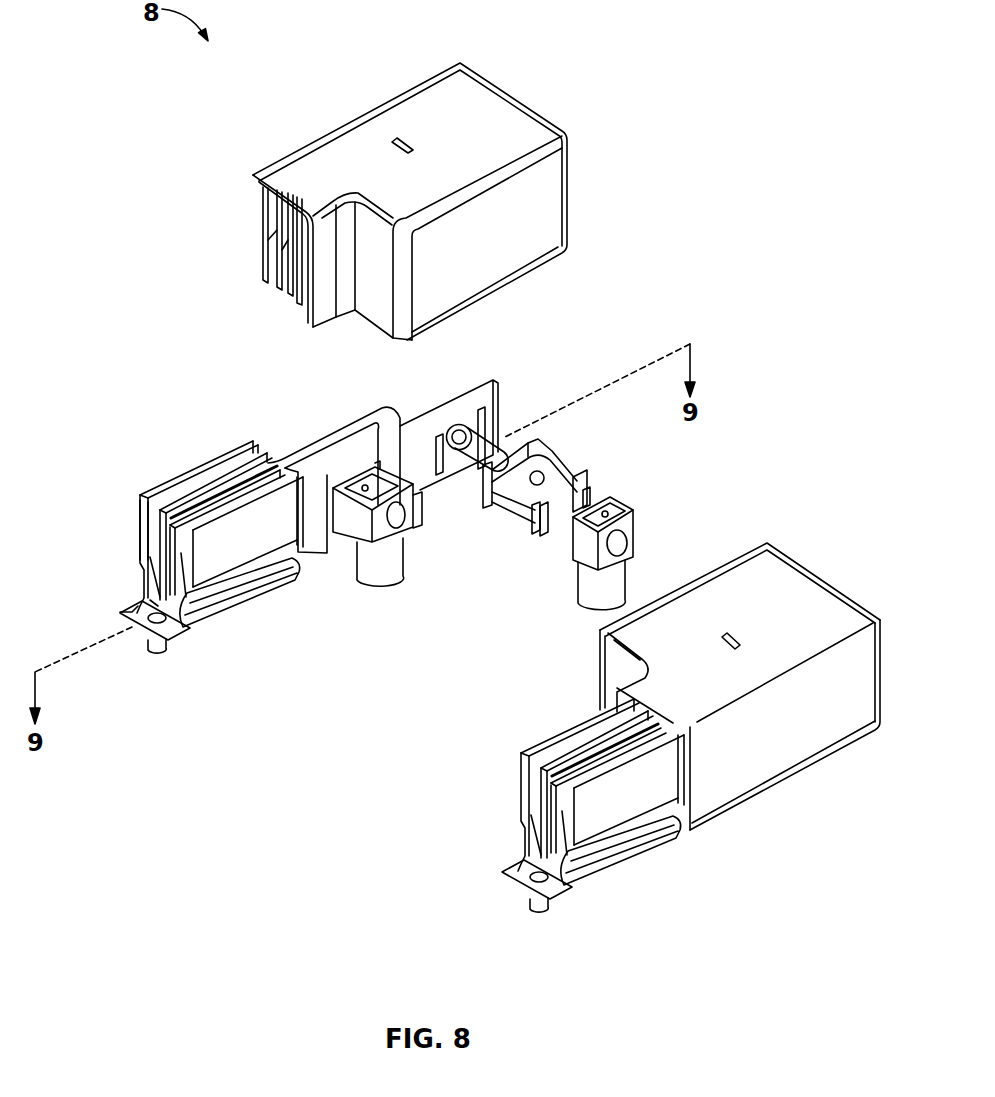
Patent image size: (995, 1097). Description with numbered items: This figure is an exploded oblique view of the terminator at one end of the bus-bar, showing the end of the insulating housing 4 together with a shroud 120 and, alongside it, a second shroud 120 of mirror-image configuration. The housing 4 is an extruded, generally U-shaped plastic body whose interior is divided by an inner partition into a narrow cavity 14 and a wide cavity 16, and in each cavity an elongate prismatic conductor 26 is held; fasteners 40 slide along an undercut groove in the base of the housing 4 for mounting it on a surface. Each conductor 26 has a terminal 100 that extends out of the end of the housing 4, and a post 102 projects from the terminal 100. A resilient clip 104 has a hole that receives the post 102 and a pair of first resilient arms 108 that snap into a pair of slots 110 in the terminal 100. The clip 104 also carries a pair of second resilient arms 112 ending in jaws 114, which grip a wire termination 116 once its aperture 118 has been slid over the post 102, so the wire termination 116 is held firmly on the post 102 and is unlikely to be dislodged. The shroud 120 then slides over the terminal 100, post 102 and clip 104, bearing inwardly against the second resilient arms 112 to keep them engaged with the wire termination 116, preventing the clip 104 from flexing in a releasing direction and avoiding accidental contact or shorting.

The insulating housing 4 is at (133, 490).
The narrow cavity 14 is at (148, 530).
The wide cavity 16 is at (138, 632).
The elongate prismatic conductor 26 is at (330, 428).
The terminal tab 40 is at (123, 618).
The terminal 100 is at (453, 402).
The post 102 is at (488, 452).
The resilient clip 104 is at (566, 457).
The first resilient arms 108 is at (547, 445).
The slots 110 is at (487, 412).
The second resilient arms 112 is at (577, 483).
The jaws 114 is at (603, 498).
The wire termination 116 is at (633, 532).
The aperture 118 is at (627, 542).
The shroud 120 is at (521, 112).